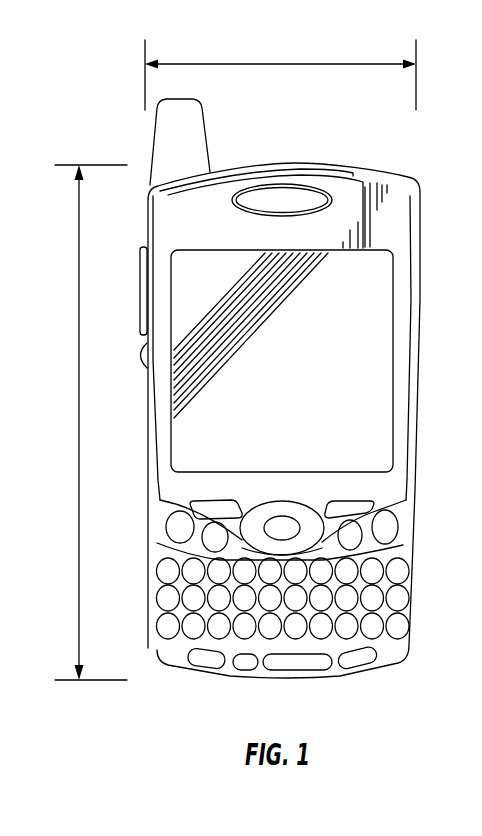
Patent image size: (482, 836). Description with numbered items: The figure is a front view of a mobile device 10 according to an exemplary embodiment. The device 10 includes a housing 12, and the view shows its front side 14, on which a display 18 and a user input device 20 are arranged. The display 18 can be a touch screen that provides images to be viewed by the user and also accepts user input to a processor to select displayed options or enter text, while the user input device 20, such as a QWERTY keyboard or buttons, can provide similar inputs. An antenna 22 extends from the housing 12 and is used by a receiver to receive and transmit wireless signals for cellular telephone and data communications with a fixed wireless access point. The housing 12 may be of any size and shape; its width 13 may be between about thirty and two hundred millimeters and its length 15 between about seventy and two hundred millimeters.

The device 10 is at (322, 132).
The housing 12 is at (391, 200).
The width 13 is at (307, 63).
The front side 14 is at (202, 226).
The length 15 is at (79, 385).
The display 18 is at (380, 322).
The user input device 20 is at (400, 562).
The antenna 22 is at (192, 142).